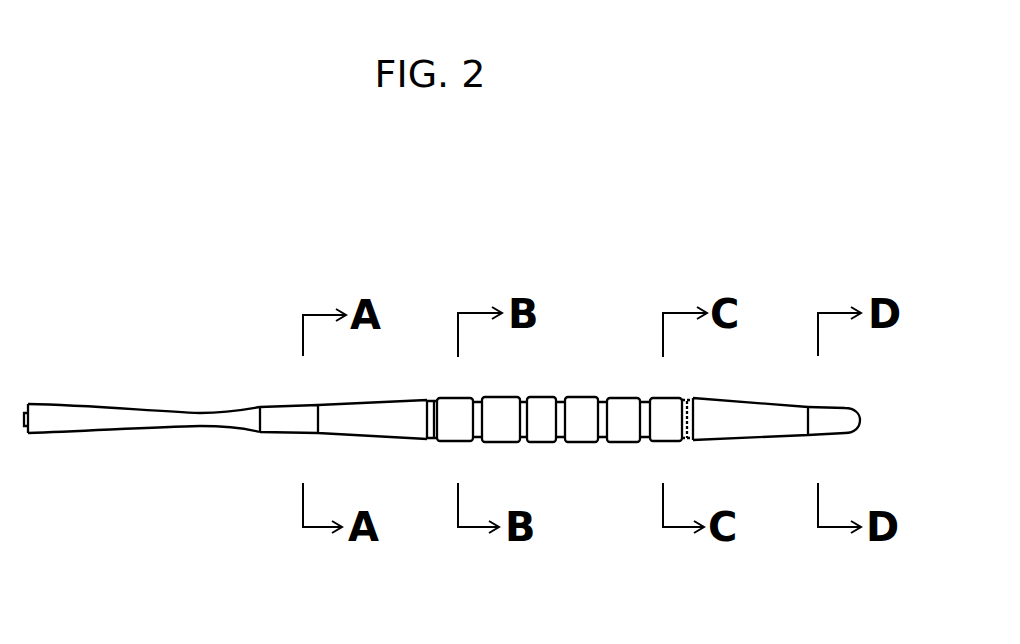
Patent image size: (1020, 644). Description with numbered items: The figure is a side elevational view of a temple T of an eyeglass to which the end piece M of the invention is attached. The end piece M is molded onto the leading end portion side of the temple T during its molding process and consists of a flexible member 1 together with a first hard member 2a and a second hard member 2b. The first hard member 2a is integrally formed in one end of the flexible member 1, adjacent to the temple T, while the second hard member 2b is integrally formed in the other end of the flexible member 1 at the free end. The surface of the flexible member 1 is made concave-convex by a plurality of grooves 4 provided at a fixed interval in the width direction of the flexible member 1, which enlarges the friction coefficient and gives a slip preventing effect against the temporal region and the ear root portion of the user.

The flexible member 1 is at (584, 397).
The temple T is at (110, 408).
The first hard member 2a is at (288, 407).
The grooves 4 is at (436, 441).
The end piece M is at (763, 386).
The second hard member 2b is at (838, 408).